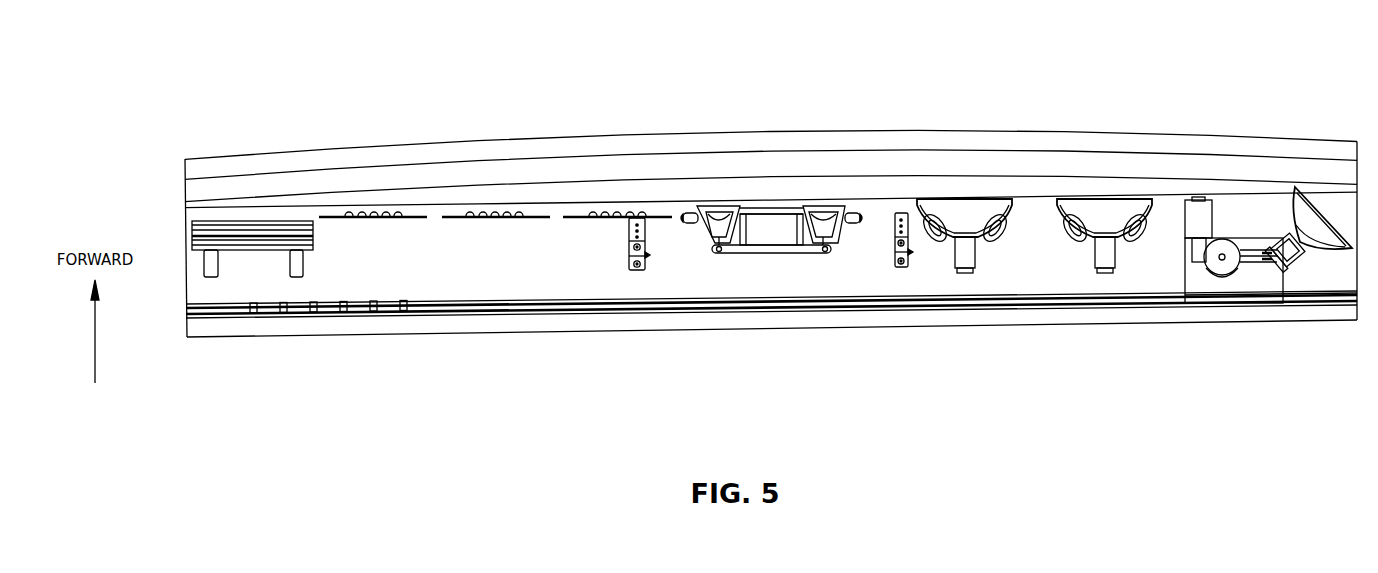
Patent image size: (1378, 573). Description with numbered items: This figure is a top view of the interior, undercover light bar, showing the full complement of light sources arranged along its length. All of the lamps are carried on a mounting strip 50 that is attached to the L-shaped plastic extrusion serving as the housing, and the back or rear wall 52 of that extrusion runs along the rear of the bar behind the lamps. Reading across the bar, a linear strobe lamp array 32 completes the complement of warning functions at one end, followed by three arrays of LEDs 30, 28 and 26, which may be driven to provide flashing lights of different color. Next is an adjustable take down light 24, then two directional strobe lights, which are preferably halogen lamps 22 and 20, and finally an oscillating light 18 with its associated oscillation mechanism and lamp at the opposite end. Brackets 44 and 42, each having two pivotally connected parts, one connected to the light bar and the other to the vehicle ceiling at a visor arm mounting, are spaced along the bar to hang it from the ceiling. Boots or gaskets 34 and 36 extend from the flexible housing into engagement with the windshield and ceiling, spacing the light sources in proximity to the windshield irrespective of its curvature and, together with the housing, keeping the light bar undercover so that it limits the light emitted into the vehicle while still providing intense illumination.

The oscillating light 18 is at (1297, 262).
The halogen lamp 20 is at (1105, 273).
The halogen lamp 22 is at (965, 273).
The adjustable take down light 24 is at (775, 260).
The array of LEDs 26 is at (582, 218).
The array of LEDs 28 is at (485, 218).
The array of LEDs 30 is at (373, 222).
The linear strobe lamp array 32 is at (249, 255).
The gasket 34 is at (300, 148).
The gasket 36 is at (752, 331).
The bracket 42 is at (899, 267).
The bracket 44 is at (635, 267).
The mounting strip 50 is at (1025, 273).
The rear wall 52 is at (558, 198).